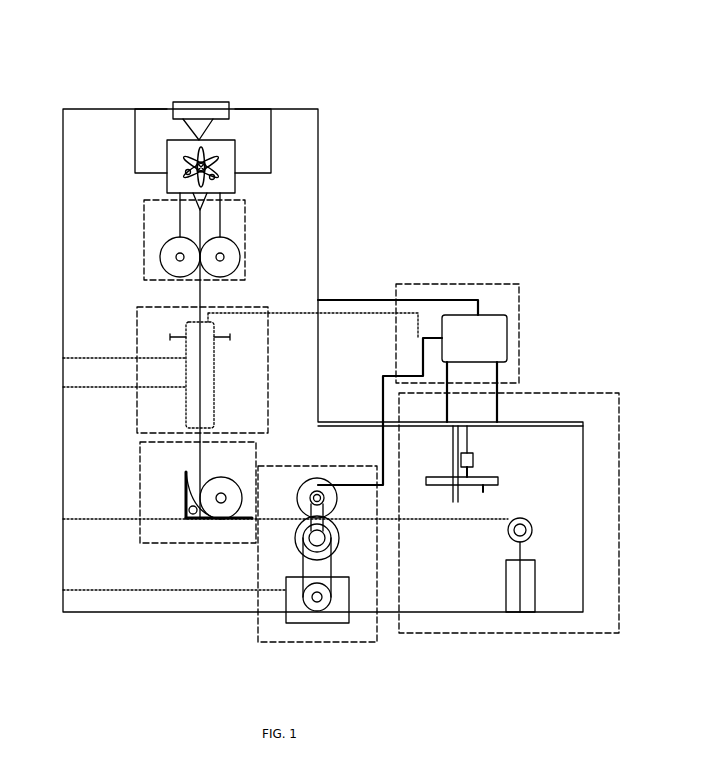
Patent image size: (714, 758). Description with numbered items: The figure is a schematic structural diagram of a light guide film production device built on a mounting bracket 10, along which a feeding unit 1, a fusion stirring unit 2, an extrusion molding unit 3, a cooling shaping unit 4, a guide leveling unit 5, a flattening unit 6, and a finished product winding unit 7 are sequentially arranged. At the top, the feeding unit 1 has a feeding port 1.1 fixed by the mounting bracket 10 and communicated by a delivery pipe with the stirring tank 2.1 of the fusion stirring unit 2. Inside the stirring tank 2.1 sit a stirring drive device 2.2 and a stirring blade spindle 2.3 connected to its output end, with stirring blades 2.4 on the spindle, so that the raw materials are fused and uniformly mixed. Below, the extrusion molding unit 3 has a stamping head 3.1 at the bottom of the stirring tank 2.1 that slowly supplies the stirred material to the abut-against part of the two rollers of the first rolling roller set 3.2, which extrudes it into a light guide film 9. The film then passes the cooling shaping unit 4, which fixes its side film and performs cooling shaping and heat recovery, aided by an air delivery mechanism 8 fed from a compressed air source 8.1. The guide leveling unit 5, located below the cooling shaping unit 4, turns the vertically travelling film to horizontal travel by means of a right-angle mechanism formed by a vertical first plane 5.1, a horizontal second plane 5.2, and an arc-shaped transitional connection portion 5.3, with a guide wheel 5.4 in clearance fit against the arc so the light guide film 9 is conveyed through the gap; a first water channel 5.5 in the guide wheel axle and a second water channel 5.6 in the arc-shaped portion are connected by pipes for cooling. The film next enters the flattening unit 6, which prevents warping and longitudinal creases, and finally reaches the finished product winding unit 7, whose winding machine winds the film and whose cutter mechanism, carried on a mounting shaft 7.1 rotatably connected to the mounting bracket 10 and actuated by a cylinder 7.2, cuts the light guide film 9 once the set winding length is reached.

The feeding unit 1 is at (214, 108).
The feeding port 1.1 is at (183, 109).
The fusion stirring unit 2 is at (201, 151).
The stirring tank 2.1 is at (235, 148).
The stirring drive device 2.2 is at (193, 167).
The stirring blade spindle 2.3 is at (207, 167).
The stirring blades 2.4 is at (212, 177).
The extrusion molding unit 3 is at (170, 228).
The stamping head 3.1 is at (198, 208).
The first rolling roller set 3.2 is at (207, 263).
The cooling shaping unit 4 is at (258, 358).
The guide leveling unit 5 is at (136, 534).
The first plane 5.1 is at (185, 507).
The second plane 5.2 is at (200, 520).
The arc-shaped transitional connection portion 5.3 is at (185, 495).
The guide wheel 5.4 is at (228, 507).
The first water channel 5.5 is at (220, 500).
The second water channel 5.6 is at (185, 518).
The flattening unit 6 is at (347, 475).
The finished product winding unit 7 is at (512, 489).
The mounting shaft 7.1 is at (453, 442).
The cylinder 7.2 is at (475, 457).
The air delivery mechanism 8 is at (479, 346).
The compressed air source 8.1 is at (495, 333).
The light guide film 9 is at (200, 297).
The mounting bracket 10 is at (318, 200).